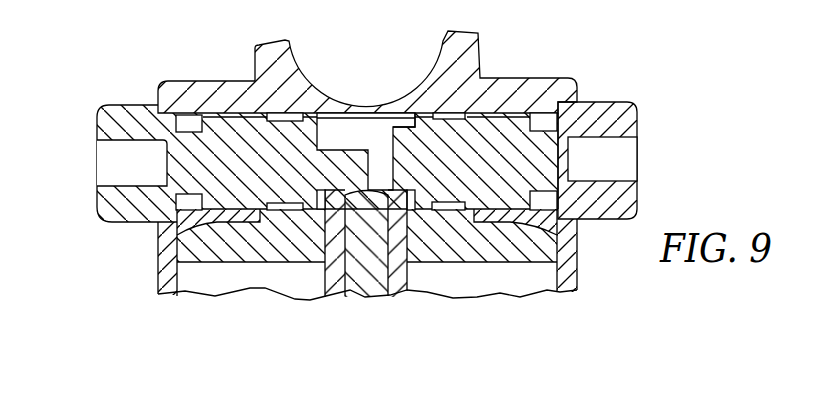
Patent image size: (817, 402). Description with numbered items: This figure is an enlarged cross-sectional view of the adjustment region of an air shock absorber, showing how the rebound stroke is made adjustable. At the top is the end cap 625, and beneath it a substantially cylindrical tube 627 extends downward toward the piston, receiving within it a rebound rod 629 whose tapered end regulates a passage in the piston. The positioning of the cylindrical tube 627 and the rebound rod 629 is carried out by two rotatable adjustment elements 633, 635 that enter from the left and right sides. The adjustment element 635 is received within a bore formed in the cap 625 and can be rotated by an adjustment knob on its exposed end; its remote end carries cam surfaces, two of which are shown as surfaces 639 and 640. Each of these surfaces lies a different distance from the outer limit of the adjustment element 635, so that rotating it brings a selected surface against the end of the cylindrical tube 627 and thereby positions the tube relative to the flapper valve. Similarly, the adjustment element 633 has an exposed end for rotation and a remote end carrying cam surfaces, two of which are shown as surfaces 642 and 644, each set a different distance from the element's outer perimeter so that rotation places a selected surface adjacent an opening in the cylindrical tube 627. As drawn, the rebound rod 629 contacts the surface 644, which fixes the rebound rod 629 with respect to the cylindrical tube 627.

The end cap 625 is at (470, 46).
The cylindrical tube 627 is at (398, 283).
The rebound rod 629 is at (360, 283).
The adjustment element 633 is at (113, 117).
The adjustment element 635 is at (620, 122).
The cam surface 639 is at (414, 112).
The cam surface 640 is at (413, 191).
The cam surface 642 is at (360, 150).
The cam surface 644 is at (335, 190).